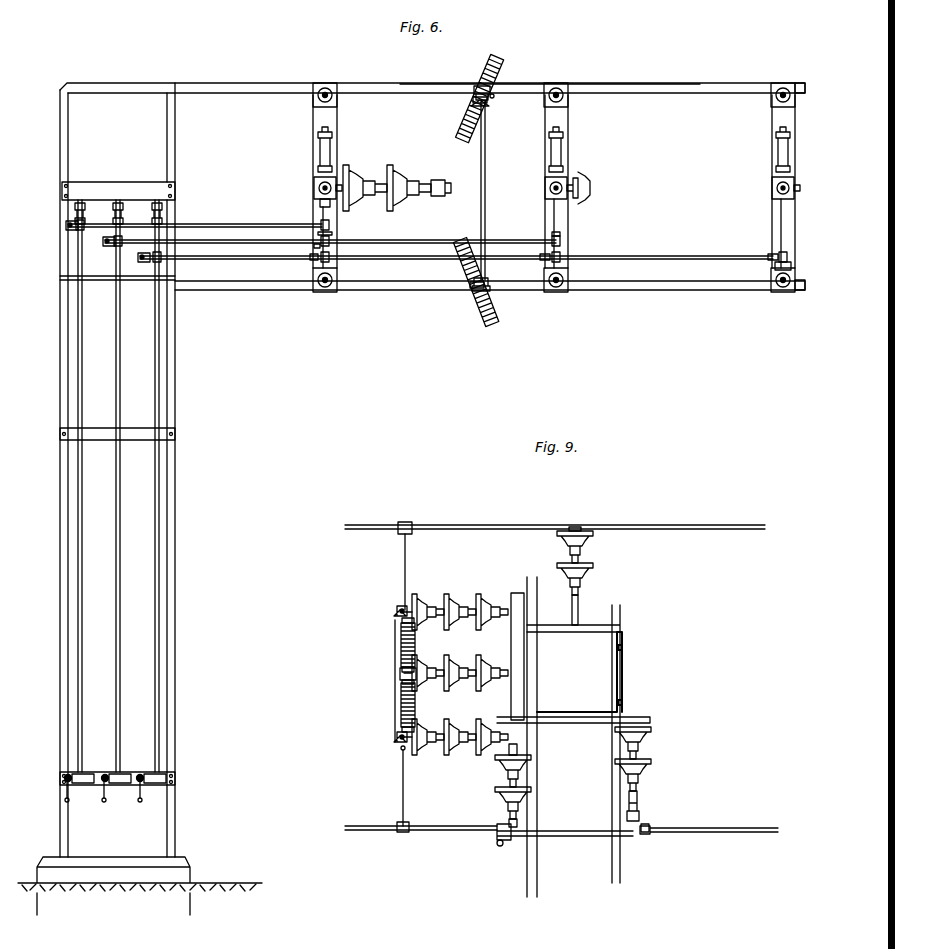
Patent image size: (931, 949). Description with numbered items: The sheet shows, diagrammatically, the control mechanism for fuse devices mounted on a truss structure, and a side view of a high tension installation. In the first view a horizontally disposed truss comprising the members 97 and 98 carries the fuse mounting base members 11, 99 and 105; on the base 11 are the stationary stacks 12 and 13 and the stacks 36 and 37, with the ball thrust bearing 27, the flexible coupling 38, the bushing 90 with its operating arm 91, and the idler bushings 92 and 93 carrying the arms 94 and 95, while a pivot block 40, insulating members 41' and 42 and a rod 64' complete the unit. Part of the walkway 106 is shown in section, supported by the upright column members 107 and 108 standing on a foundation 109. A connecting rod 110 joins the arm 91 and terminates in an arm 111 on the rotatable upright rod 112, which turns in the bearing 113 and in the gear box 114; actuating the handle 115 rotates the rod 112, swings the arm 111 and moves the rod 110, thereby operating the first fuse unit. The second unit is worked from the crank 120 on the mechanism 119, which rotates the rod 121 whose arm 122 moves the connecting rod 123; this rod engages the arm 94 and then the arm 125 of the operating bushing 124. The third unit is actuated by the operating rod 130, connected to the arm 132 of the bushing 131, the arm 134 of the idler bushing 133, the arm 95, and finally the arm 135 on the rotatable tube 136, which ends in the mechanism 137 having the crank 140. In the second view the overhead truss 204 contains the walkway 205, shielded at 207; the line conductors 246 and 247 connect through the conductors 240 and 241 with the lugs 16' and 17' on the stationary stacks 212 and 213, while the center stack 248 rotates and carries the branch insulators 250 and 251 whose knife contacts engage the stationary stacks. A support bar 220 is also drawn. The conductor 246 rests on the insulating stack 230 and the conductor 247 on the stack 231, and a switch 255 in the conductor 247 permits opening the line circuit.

In FIG. 6, the fuse mounting base member 11 is at (339, 116).
In FIG. 6, the stationary stack 12 is at (322, 88).
In FIG. 6, the stationary stack 13 is at (328, 292).
In FIG. 6, the ball thrust bearing 27 is at (334, 145).
In FIG. 6, the stack 36 is at (313, 184).
In FIG. 6, the stack 37 is at (397, 172).
In FIG. 6, the flexible coupling 38 is at (320, 204).
In FIG. 6, the pivot block 40 is at (451, 189).
In FIG. 6, the upper corrugated insulator rod 41' is at (463, 98).
In FIG. 6, the lower corrugated insulator rod 42 is at (440, 216).
In FIG. 6, the operating rod 64' is at (495, 188).
In FIG. 6, the bushing 90 is at (331, 232).
In FIG. 6, the operating arm 91 is at (320, 224).
In FIG. 6, the idler bushing 92 is at (331, 241).
In FIG. 6, the idler bushing 93 is at (331, 260).
In FIG. 6, the arm 94 is at (310, 258).
In FIG. 6, the arm 95 is at (316, 262).
In FIG. 6, the truss member 97 is at (522, 92).
In FIG. 6, the truss member 98 is at (520, 291).
In FIG. 6, the fuse mounting base member 99 is at (567, 118).
In FIG. 6, the fuse mounting base member 105 is at (775, 120).
In FIG. 6, the passage or walkway 106 is at (137, 95).
In FIG. 6, the upright column member 107 is at (62, 503).
In FIG. 6, the upright column member 108 is at (173, 483).
In FIG. 6, the foundation 109 is at (180, 866).
In FIG. 6, the connecting rod 110 is at (200, 224).
In FIG. 6, the arm 111 is at (68, 231).
In FIG. 6, the rotatable upright rod 112 is at (77, 344).
In FIG. 6, the bearing 113 is at (63, 206).
In FIG. 6, the operating mechanism 114 is at (67, 771).
In FIG. 6, the operating member 115 is at (64, 793).
In FIG. 6, the gear box 119 is at (120, 771).
In FIG. 6, the actuating member 120 is at (108, 796).
In FIG. 6, the connecting rod 121 is at (118, 585).
In FIG. 6, the arm 122 is at (113, 247).
In FIG. 6, the connecting rod 123 is at (236, 240).
In FIG. 6, the operating bushing 124 is at (560, 238).
In FIG. 6, the arm 125 is at (550, 240).
In FIG. 6, the operating rod 130 is at (200, 259).
In FIG. 6, the operating bushing 131 is at (776, 268).
In FIG. 6, the arm 132 is at (770, 256).
In FIG. 6, the idler bushing 133 is at (562, 256).
In FIG. 6, the arm 134 is at (540, 259).
In FIG. 6, the arm 135 is at (141, 263).
In FIG. 6, the rotatable rod or tube 136 is at (165, 336).
In FIG. 6, the actuating mechanism 137 is at (162, 771).
In FIG. 6, the crank 140 is at (146, 793).
In FIG. 9, the lug 16' is at (387, 599).
In FIG. 9, the lug 17' is at (388, 755).
In FIG. 9, the overhead truss structure 204 is at (625, 672).
In FIG. 9, the passage or walkway 205 is at (597, 656).
In FIG. 9, the shielding 207 is at (539, 673).
In FIG. 9, the stationary stack 212 is at (470, 600).
In FIG. 9, the stationary stack 213 is at (462, 752).
In FIG. 9, the support bar 220 is at (393, 693).
In FIG. 9, the insulating stack 230 is at (590, 576).
In FIG. 9, the insulating supporting stack 231 is at (505, 785).
In FIG. 9, the conductor 240 is at (403, 564).
In FIG. 9, the conductor 241 is at (401, 800).
In FIG. 9, the line conductor 246 is at (533, 525).
In FIG. 9, the line conductor 247 is at (445, 832).
In FIG. 9, the center stack 248 is at (470, 665).
In FIG. 9, the branch insulator 250 is at (416, 641).
In FIG. 9, the branch insulator 251 is at (416, 704).
In FIG. 9, the switch 255 is at (576, 838).